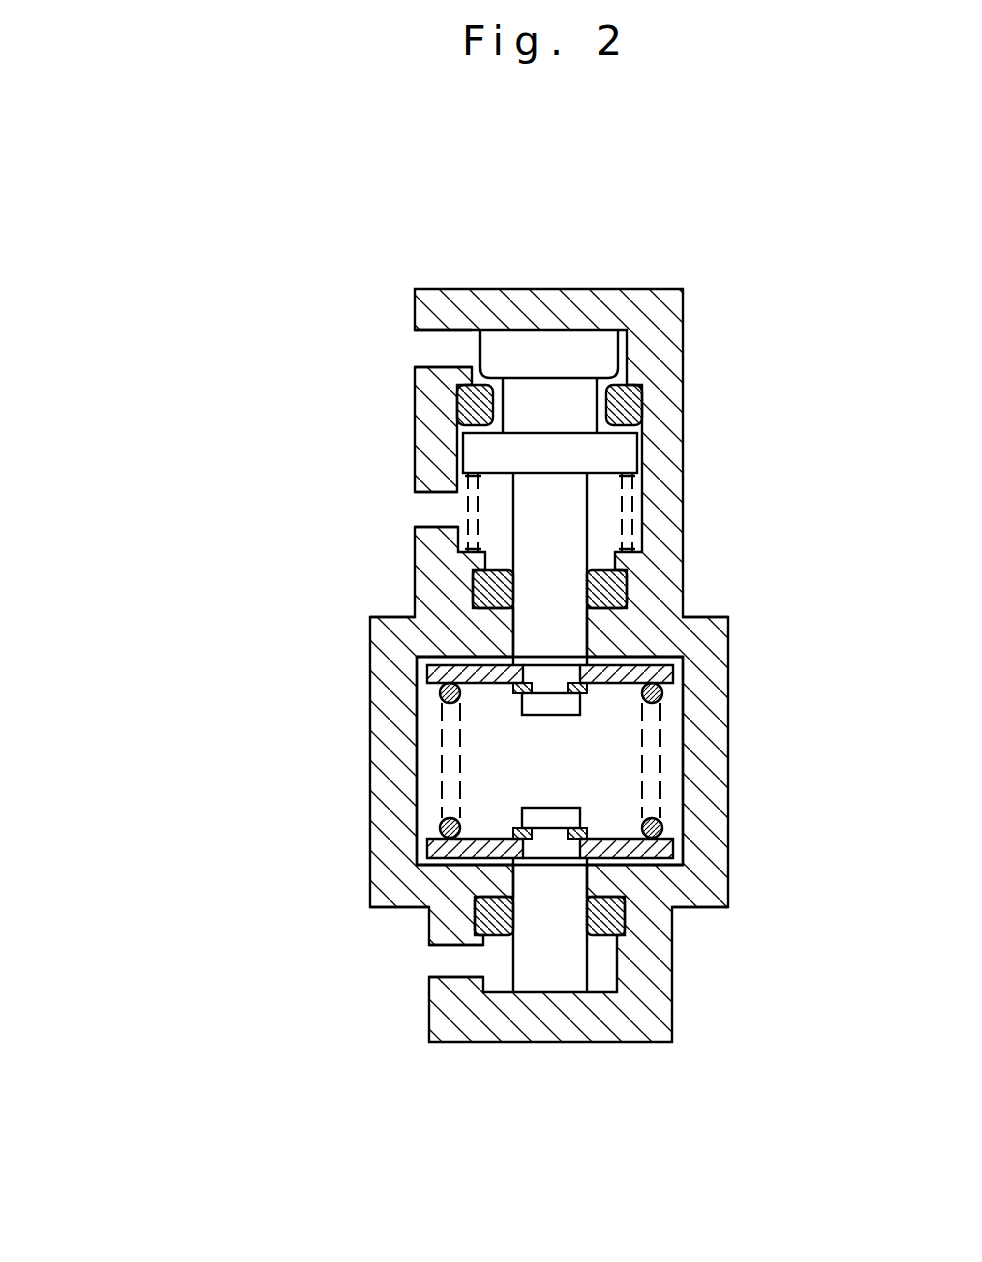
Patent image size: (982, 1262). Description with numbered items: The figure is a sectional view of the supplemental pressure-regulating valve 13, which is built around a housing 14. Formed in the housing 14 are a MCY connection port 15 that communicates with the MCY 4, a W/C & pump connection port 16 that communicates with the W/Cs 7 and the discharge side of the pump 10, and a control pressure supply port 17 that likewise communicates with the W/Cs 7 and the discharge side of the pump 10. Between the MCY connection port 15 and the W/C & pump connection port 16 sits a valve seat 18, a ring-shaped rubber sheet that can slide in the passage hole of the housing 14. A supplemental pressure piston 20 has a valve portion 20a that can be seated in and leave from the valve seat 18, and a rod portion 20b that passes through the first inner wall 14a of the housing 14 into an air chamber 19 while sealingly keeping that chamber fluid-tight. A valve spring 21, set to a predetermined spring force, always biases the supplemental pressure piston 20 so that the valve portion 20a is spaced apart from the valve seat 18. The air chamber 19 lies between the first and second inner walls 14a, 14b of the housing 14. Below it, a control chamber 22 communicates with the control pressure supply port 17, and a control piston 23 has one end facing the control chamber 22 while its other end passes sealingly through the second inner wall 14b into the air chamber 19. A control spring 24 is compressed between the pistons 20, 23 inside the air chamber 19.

The MCY 4 is at (418, 348).
The W/Cs 7 is at (418, 510).
The pump 10 is at (430, 963).
The supplemental pressure-regulating valve 13 is at (738, 586).
The housing 14 is at (554, 736).
The first inner wall 14a is at (495, 633).
The second inner wall 14b is at (605, 883).
The MCY connection port 15 is at (418, 341).
The W/C & pump connection port 16 is at (418, 510).
The control pressure supply port 17 is at (430, 963).
The valve seat 18 is at (635, 410).
The air chamber 19 is at (566, 785).
The supplemental pressure piston 20 is at (651, 497).
The valve portion 20a is at (608, 360).
The rod portion 20b is at (568, 627).
The valve spring 21 is at (630, 545).
The control chamber 22 is at (600, 983).
The control piston 23 is at (567, 966).
The control spring 24 is at (650, 828).